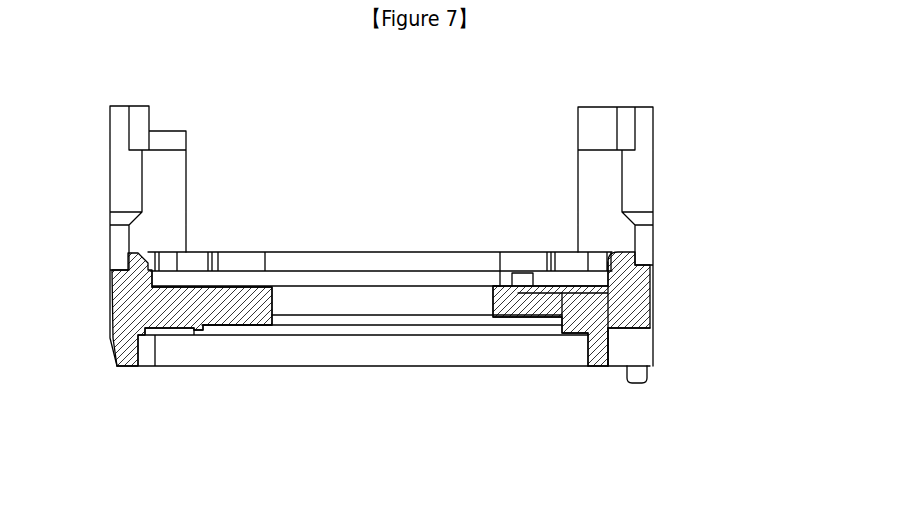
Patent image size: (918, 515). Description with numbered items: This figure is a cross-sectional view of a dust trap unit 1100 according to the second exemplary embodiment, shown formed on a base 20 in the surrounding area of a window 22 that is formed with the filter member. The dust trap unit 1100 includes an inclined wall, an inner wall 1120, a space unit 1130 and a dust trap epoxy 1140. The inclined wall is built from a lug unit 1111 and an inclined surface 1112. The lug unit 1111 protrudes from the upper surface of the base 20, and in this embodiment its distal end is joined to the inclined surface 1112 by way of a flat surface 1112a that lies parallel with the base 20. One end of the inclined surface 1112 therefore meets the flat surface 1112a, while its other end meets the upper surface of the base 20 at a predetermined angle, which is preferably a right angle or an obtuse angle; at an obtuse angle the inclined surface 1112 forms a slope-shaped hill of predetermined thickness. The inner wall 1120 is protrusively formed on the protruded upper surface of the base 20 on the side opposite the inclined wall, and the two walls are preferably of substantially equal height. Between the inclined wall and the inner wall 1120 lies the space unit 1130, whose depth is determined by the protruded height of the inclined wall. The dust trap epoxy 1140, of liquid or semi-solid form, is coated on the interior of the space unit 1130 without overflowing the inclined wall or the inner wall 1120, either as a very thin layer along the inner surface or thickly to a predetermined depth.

The base 20 is at (530, 87).
The window 22 is at (332, 295).
The dust trap unit 1100 is at (617, 426).
The lug unit 1111 is at (507, 287).
The inclined surface 1112 is at (522, 286).
The flat surface 1112a is at (495, 287).
The inner wall 1120 is at (642, 263).
The space unit 1130 is at (566, 286).
The dust trap epoxy 1140 is at (598, 310).